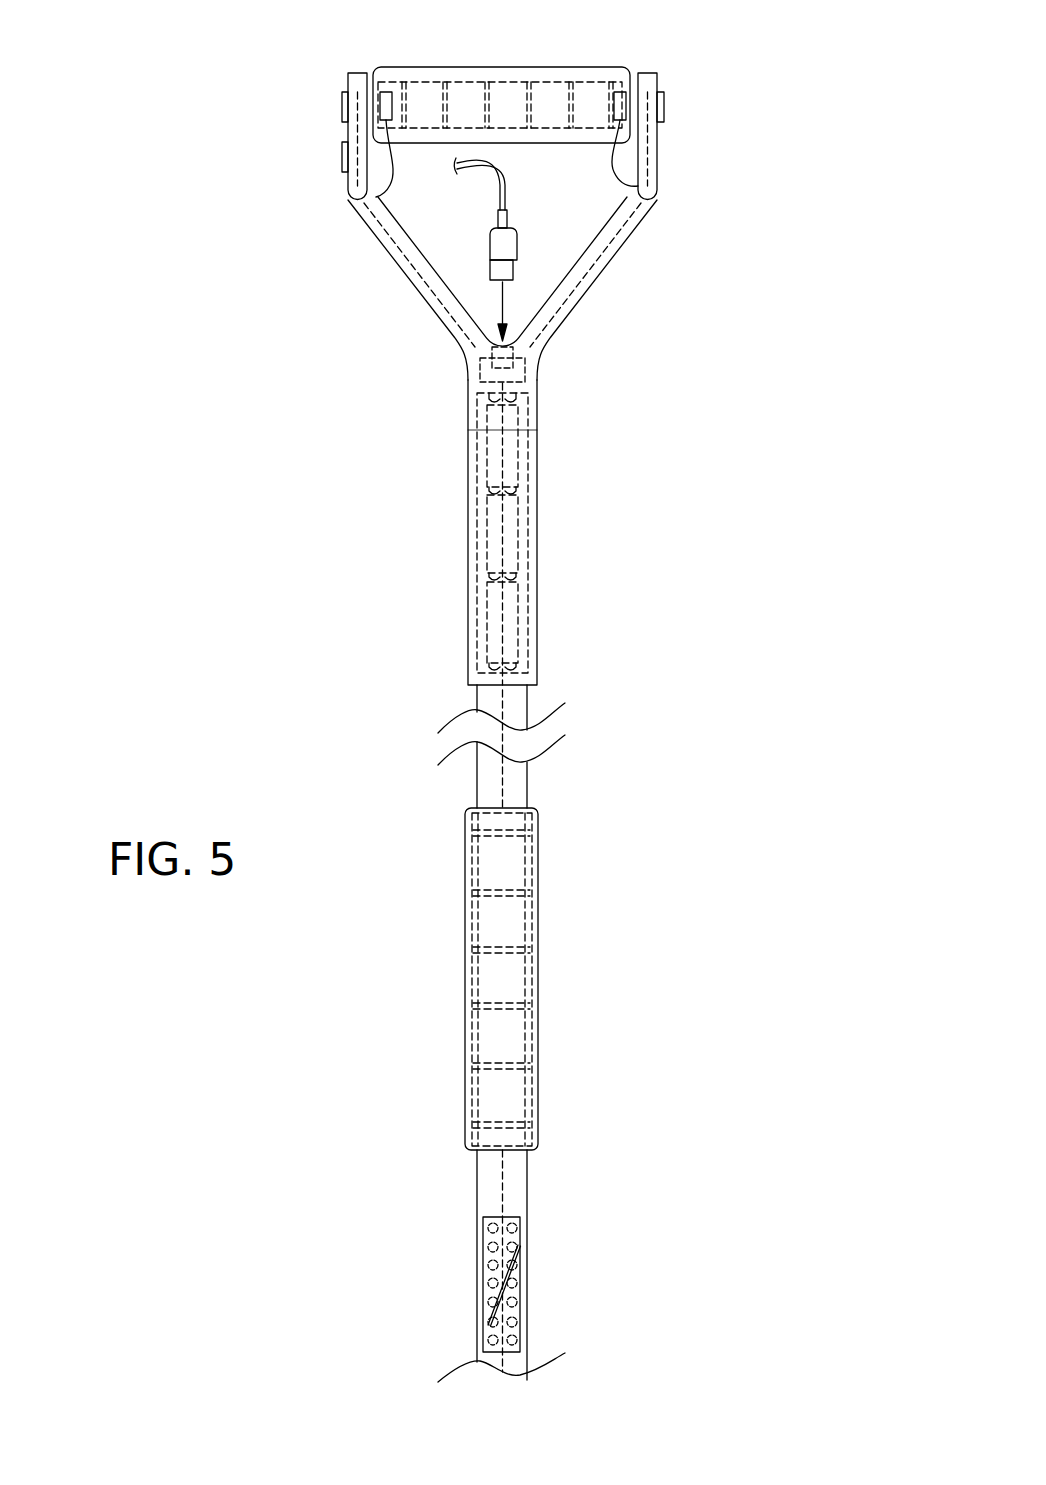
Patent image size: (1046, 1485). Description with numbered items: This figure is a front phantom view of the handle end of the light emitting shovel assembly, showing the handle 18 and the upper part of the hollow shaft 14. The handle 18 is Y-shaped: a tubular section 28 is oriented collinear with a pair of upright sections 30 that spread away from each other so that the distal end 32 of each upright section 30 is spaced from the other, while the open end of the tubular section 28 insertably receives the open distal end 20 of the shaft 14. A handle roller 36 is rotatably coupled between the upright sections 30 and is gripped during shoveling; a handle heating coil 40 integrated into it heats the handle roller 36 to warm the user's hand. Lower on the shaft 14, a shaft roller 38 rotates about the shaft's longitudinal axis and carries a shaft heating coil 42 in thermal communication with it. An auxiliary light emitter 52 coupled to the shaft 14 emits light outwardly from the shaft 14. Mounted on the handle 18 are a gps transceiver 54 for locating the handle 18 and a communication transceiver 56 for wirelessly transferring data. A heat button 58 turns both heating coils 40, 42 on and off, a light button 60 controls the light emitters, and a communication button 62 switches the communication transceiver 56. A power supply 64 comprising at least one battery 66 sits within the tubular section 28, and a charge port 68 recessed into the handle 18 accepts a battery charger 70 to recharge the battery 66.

The shaft 14 is at (527, 787).
The handle 18 is at (348, 73).
The distal end 20 is at (495, 430).
The tubular section 28 is at (553, 376).
The upright sections 30 is at (508, 272).
The distal end 32 is at (357, 72).
The handle roller 36 is at (542, 68).
The shaft roller 38 is at (491, 979).
The handle heating coil 40 is at (443, 110).
The shaft heating coil 42 is at (505, 946).
The auxiliary light emitter 52 is at (487, 1266).
The gps transceiver 54 is at (657, 184).
The communication transceiver 56 is at (350, 199).
The heat button 58 is at (664, 106).
The light button 60 is at (342, 160).
The communication button 62 is at (342, 109).
The power supply 64 is at (510, 533).
The battery 66 is at (496, 465).
The charge port 68 is at (493, 357).
The battery charger 70 is at (517, 255).